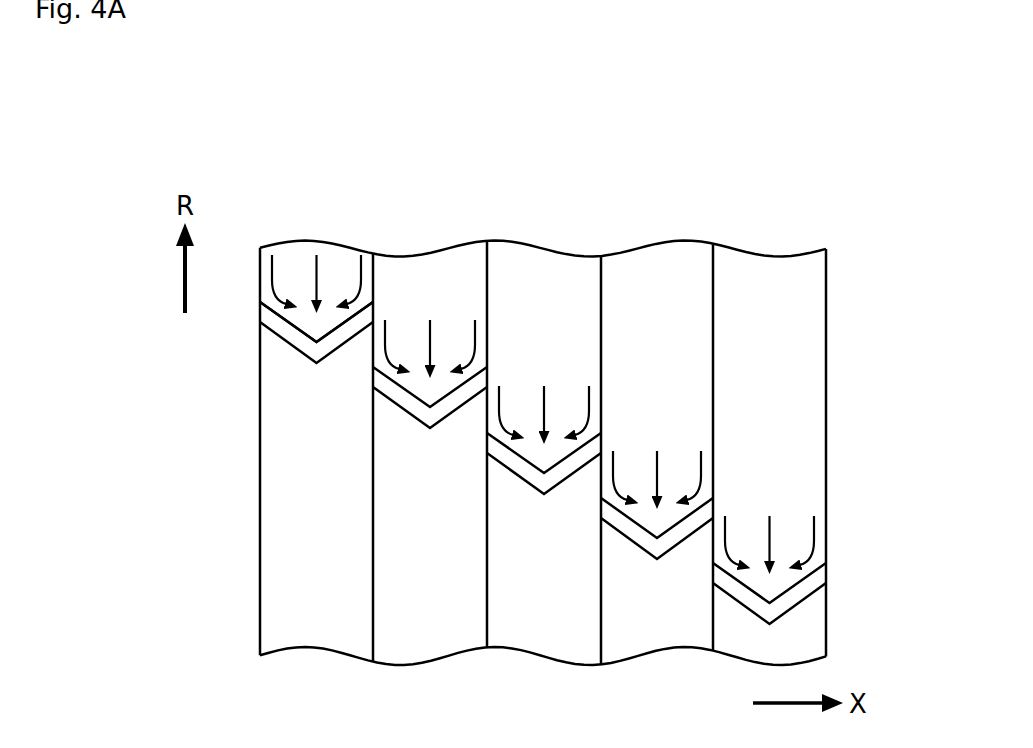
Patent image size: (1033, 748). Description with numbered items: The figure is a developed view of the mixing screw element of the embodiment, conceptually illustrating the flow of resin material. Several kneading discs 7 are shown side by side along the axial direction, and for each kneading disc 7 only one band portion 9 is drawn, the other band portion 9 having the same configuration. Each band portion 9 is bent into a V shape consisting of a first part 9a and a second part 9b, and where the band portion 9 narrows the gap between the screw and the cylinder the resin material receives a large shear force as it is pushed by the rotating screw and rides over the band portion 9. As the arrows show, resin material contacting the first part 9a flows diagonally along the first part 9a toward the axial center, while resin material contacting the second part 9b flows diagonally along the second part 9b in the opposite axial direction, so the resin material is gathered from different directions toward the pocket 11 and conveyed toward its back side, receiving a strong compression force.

The kneading disc 7 is at (321, 222).
The band portion 9 is at (494, 463).
The first part 9a is at (290, 332).
The second part 9b is at (341, 345).
The pocket 11 is at (315, 333).